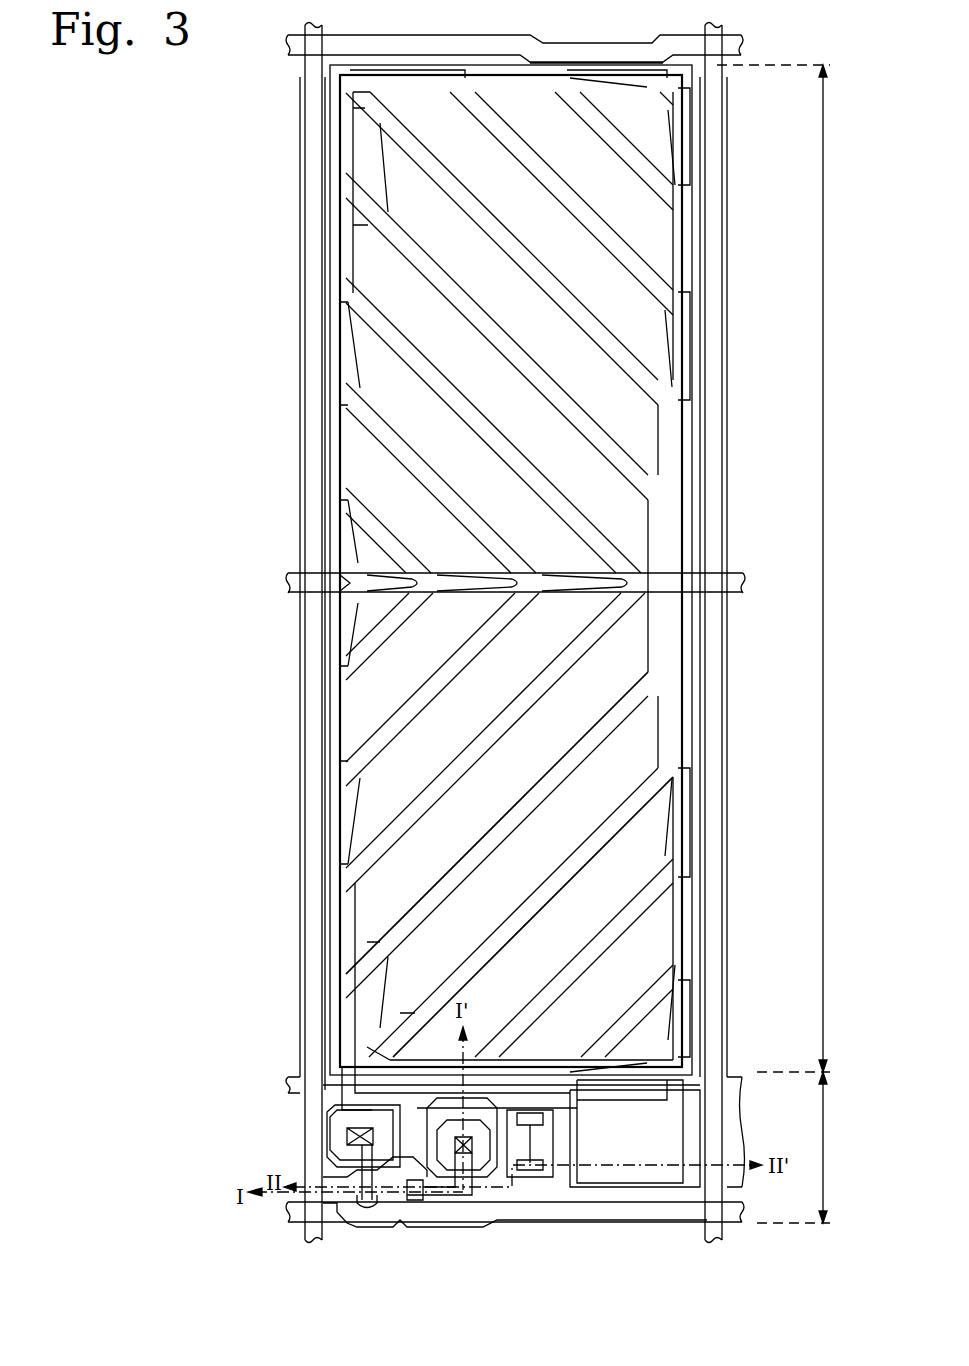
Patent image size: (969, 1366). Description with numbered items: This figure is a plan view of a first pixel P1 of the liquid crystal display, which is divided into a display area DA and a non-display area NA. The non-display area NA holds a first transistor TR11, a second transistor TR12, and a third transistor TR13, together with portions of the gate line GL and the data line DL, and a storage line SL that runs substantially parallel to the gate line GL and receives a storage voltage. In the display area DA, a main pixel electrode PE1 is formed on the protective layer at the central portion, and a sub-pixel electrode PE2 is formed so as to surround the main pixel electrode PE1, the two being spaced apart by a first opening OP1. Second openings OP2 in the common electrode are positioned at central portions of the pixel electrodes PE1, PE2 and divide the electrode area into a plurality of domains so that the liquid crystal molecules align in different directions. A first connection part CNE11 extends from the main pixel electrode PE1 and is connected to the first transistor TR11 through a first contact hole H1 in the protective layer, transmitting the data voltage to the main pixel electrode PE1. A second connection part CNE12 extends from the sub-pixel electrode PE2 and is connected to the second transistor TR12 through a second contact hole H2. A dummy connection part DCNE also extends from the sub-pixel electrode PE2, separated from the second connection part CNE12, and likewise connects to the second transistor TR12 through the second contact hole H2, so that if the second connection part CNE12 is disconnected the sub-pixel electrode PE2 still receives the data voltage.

The first pixel P1 is at (252, 112).
The display area DA is at (839, 568).
The non-display area NA is at (839, 1147).
The data line DL is at (311, 1240).
The storage line SL is at (735, 1133).
The gate line GL is at (735, 1207).
The main pixel electrode PE1 is at (628, 643).
The sub-pixel electrode PE2 is at (573, 571).
The first opening OP1 is at (643, 788).
The second openings OP2 is at (628, 700).
The second connection part CNE12 is at (337, 1103).
The first connection part CNE11 is at (353, 1117).
The second contact hole H2 is at (345, 1137).
The first contact hole H1 is at (472, 1150).
The first transistor TR11 is at (400, 1225).
The second transistor TR12 is at (355, 1225).
The third transistor TR13 is at (530, 1170).
The dummy connection part DCNE is at (497, 1195).